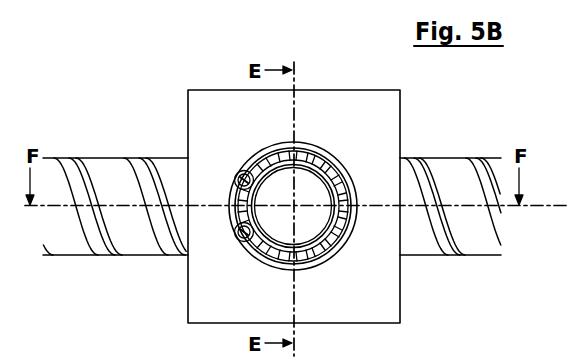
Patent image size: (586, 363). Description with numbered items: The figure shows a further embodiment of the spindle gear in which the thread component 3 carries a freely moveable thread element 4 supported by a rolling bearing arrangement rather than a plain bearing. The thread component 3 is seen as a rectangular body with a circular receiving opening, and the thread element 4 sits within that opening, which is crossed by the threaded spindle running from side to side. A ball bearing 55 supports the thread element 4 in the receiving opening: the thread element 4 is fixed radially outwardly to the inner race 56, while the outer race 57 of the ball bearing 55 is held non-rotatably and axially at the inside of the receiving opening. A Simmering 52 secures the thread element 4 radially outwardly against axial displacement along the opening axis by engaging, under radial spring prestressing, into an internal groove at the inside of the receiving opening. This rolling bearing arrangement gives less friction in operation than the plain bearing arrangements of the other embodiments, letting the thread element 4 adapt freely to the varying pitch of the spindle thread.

The thread component 3 is at (182, 85).
The thread element 4 is at (321, 217).
The Simmering 52 is at (330, 157).
The ball bearing 55 is at (345, 161).
The inner race 56 is at (309, 150).
The outer race 57 is at (232, 214).